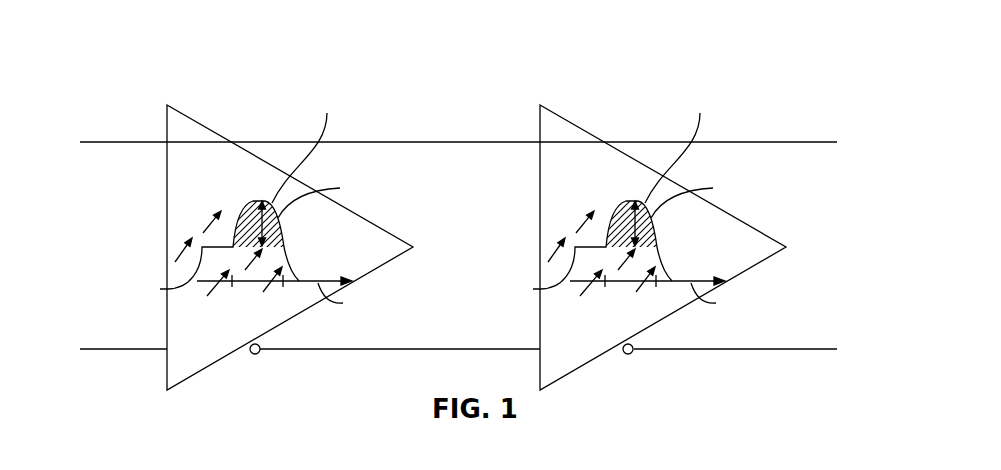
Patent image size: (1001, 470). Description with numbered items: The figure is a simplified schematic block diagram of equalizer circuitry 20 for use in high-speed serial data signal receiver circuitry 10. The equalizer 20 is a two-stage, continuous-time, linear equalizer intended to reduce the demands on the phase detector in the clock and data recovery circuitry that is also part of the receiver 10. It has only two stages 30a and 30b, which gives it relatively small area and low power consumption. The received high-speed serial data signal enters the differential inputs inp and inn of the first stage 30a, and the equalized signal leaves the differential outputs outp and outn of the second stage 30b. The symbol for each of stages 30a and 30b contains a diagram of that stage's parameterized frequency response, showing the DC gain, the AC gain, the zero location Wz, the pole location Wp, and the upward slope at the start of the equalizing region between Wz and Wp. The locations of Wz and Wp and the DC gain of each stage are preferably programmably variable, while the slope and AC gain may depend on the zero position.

The high-speed serial data signal receiver circuitry 10 is at (110, 30).
The equalizer circuitry 20 is at (538, 64).
The first stage 30a is at (167, 117).
The second stage 30b is at (540, 117).